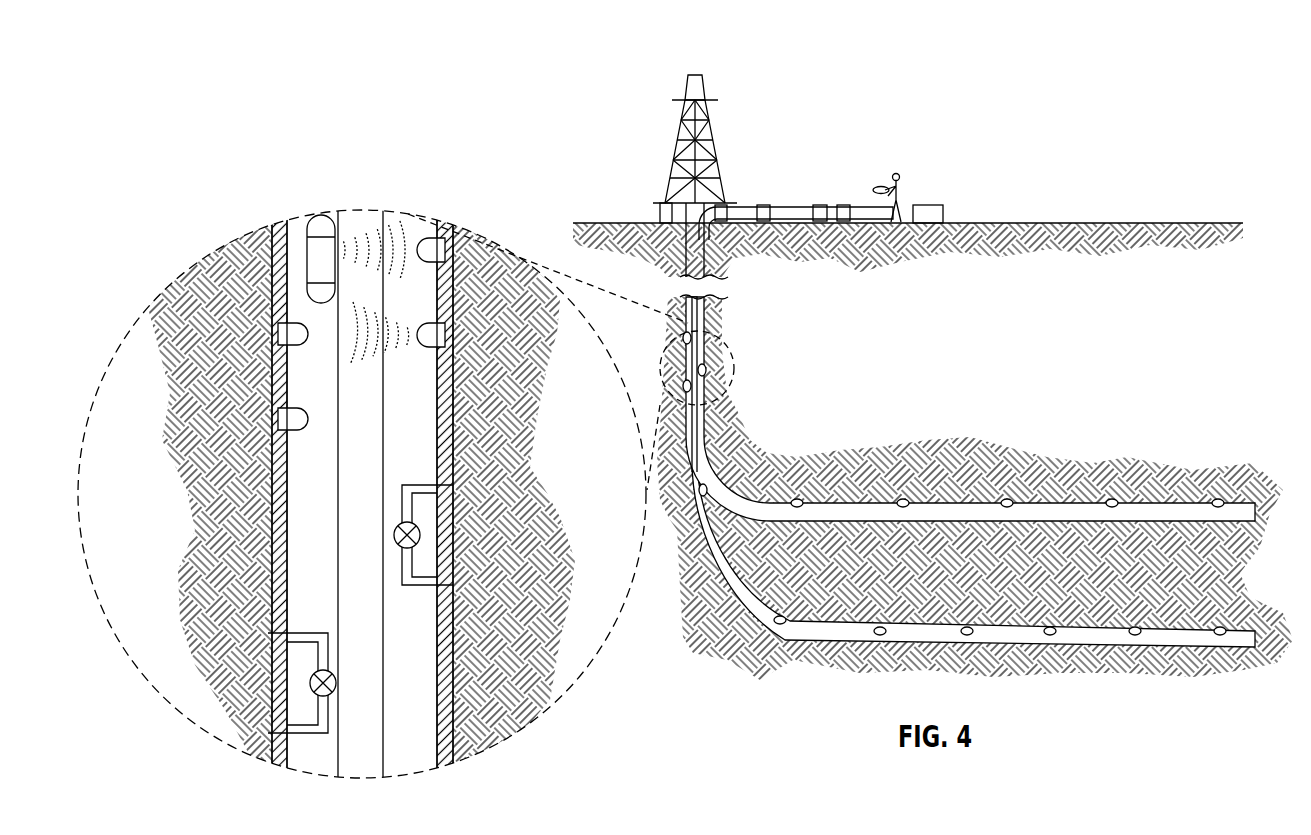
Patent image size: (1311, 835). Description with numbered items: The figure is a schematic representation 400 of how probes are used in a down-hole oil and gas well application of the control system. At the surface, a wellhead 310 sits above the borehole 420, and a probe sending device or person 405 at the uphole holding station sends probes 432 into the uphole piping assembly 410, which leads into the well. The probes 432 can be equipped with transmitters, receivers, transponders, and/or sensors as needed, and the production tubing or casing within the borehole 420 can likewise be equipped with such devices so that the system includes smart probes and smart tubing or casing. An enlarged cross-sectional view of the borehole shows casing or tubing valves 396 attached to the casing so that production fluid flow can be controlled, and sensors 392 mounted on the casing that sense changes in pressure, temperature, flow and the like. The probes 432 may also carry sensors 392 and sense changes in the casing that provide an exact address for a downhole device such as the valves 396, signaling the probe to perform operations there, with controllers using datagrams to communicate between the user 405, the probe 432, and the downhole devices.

The schematic representation 400 is at (987, 57).
The wellhead 310 is at (706, 93).
The uphole piping assembly 410 is at (762, 206).
The probe sending device or person 405 is at (905, 186).
The probe 432 is at (880, 187).
The borehole 420 is at (683, 336).
The casing or tubing valves 396 is at (798, 500).
The sensors 392 is at (312, 365).